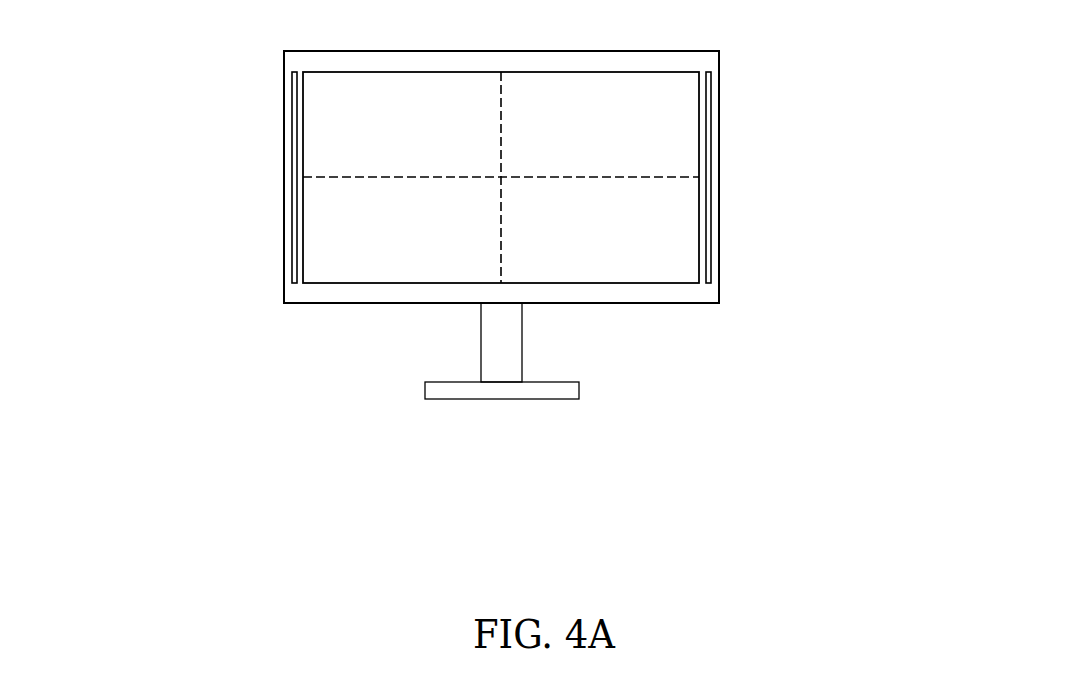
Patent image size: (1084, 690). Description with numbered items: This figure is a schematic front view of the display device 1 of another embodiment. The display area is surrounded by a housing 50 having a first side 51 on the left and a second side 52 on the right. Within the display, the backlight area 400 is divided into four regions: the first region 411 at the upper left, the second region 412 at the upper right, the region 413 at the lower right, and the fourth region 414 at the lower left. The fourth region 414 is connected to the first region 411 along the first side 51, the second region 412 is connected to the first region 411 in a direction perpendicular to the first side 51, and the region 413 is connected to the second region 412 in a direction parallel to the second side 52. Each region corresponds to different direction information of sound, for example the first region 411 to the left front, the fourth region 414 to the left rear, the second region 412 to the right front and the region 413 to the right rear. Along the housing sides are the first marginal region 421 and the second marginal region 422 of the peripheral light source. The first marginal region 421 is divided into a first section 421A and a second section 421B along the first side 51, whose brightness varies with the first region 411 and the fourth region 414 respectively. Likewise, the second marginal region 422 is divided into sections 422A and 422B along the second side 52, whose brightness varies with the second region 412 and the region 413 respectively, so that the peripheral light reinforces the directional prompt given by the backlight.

The display device 1 is at (215, 29).
The housing 50 is at (682, 51).
The first side 51 is at (283, 262).
The second side 52 is at (719, 248).
The backlight area 400 is at (502, 272).
The first region 411 is at (376, 143).
The second region 412 is at (573, 143).
The region 413 is at (573, 248).
The fourth region 414 is at (376, 248).
The first marginal region 421 is at (155, 150).
The first section 421A is at (285, 148).
The second section 421B is at (285, 212).
The second marginal region 422 is at (848, 142).
The section 422A is at (712, 131).
The section 422B is at (712, 225).